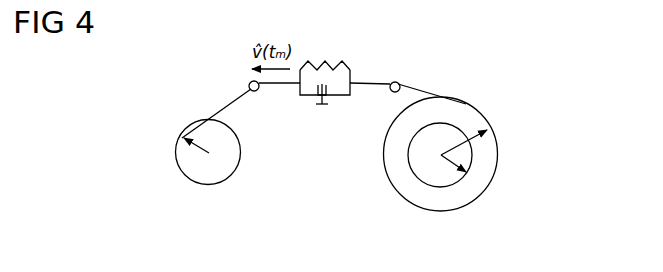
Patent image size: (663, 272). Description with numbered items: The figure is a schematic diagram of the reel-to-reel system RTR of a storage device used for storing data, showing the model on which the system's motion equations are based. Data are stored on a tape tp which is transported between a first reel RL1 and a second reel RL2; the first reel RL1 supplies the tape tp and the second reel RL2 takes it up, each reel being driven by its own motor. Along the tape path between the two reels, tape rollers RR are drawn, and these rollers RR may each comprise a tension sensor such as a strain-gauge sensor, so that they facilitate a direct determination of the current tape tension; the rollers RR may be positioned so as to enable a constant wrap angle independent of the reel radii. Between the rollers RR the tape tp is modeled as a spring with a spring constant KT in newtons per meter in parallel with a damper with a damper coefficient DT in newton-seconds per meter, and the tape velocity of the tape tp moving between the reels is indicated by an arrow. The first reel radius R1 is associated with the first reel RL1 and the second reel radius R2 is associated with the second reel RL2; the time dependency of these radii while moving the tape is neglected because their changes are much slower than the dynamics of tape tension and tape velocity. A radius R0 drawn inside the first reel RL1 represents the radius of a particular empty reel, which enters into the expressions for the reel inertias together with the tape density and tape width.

The reel-to-reel system RTR is at (528, 50).
The tape tp is at (447, 97).
The tape rollers RR is at (249, 86).
The spring constant KT is at (325, 51).
The damper coefficient DT is at (325, 105).
The first reel RL1 is at (451, 175).
The second reel RL2 is at (185, 176).
The first reel radius R1 is at (451, 154).
The empty reel radius R0 is at (440, 155).
The second reel radius R2 is at (203, 204).